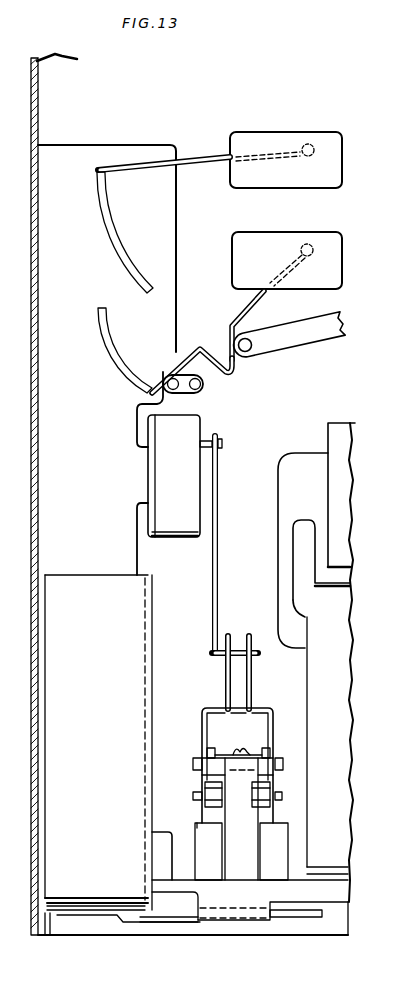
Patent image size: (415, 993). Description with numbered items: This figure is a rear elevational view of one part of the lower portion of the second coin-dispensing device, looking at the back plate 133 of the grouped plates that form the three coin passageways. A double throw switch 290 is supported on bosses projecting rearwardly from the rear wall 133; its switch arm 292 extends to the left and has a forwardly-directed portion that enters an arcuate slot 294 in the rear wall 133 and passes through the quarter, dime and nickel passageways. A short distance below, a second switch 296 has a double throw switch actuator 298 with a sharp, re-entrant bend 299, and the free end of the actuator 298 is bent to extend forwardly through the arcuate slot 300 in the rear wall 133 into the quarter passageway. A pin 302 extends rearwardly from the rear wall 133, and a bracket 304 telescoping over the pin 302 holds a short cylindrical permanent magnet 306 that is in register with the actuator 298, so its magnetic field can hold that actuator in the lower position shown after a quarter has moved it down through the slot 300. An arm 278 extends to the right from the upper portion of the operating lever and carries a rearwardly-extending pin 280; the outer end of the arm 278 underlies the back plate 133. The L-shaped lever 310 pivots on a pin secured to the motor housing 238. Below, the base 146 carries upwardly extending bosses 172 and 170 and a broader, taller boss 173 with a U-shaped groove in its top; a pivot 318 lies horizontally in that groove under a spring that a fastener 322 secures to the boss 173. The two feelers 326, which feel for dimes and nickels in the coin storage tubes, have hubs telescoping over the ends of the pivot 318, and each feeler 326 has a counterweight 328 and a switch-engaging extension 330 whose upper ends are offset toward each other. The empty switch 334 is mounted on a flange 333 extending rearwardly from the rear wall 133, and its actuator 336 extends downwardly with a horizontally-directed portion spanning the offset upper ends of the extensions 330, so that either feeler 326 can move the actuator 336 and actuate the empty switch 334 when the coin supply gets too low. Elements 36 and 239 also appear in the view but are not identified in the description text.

The back plate 133 is at (47, 300).
The double throw switch 290 is at (283, 135).
The switch 296 is at (277, 240).
The switch arm 292 is at (143, 163).
The arcuate slot 294 is at (113, 245).
The arcuate slot 300 is at (118, 350).
The double throw switch actuator 298 is at (232, 315).
The re-entrant bend 299 is at (213, 350).
The arm 278 is at (296, 346).
The pin 280 is at (251, 352).
The pin 302 is at (205, 384).
The bracket 304 is at (204, 391).
The permanent magnet 306 is at (180, 392).
The flange 333 is at (146, 462).
The switch 334 is at (183, 538).
The actuator 336 is at (218, 585).
The switch-engaging extension 330 is at (227, 663).
The feeler 326 is at (203, 745).
The fastener 322 is at (235, 753).
The pivot 318 is at (195, 764).
The counterweight 328 is at (210, 797).
The boss 172 is at (202, 832).
The boss 173 is at (247, 874).
The boss 170 is at (280, 875).
The L-shaped lever 310 is at (100, 748).
The inner wall 36 is at (52, 872).
The base 146 is at (50, 938).
The guide bracket 239 is at (288, 492).
The motor housing 238 is at (312, 676).